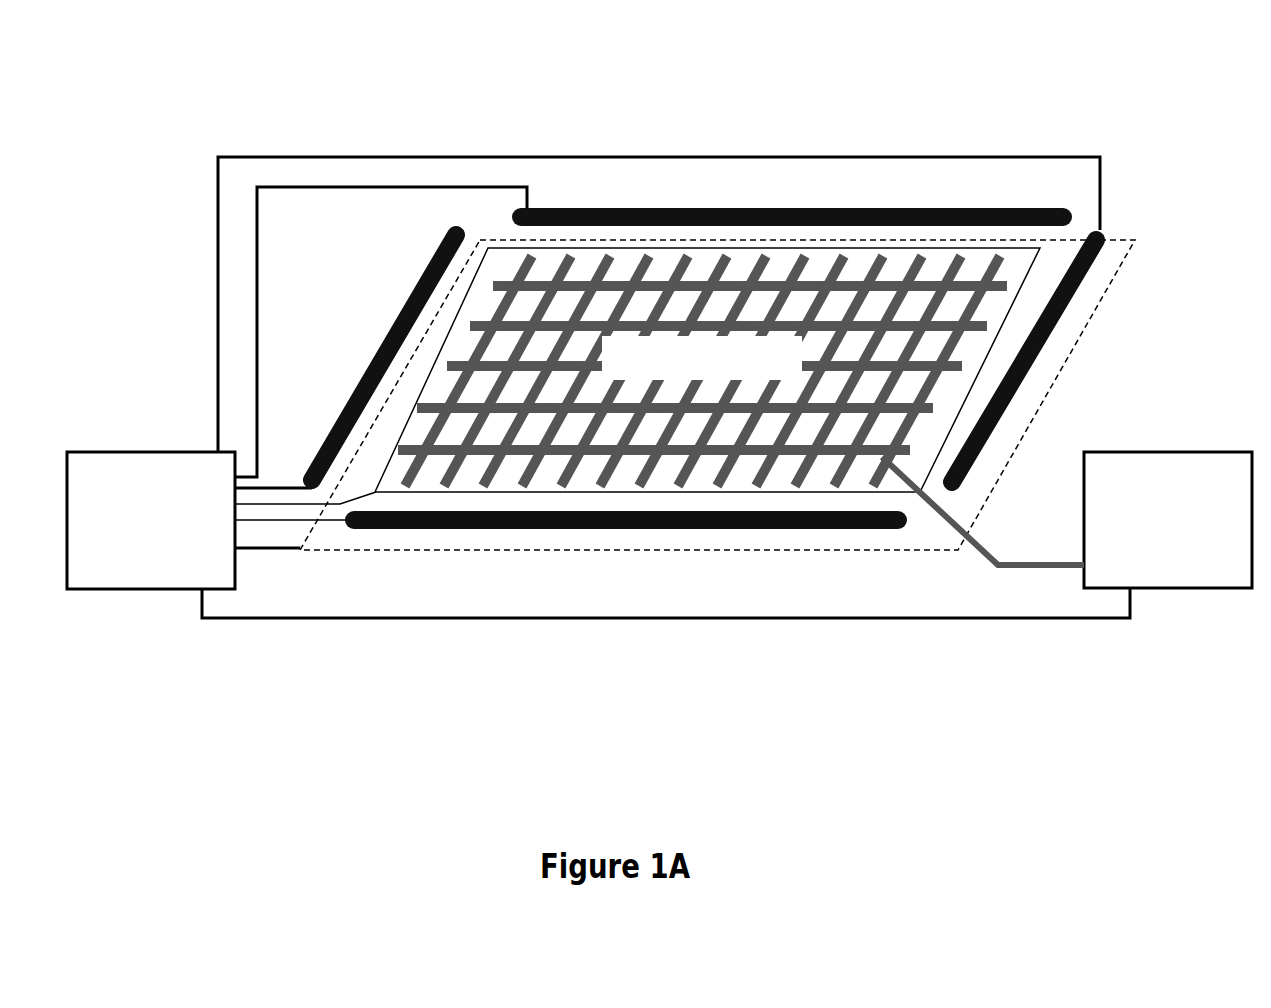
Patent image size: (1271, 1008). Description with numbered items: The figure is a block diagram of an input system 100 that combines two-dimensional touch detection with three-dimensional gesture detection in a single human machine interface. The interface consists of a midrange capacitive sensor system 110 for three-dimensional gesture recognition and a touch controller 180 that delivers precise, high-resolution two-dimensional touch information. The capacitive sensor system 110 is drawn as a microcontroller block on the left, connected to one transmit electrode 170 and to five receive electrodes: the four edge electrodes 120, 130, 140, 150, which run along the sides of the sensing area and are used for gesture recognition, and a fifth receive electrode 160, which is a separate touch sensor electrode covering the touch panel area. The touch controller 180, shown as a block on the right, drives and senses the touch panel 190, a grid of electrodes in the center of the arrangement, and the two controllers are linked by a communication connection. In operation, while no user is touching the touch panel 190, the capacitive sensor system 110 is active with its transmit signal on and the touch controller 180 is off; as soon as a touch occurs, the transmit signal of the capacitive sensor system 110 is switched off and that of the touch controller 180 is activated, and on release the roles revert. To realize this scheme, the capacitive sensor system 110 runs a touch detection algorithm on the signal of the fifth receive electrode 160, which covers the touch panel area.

The input system 100 is at (266, 88).
The capacitive sensor system 110 is at (128, 452).
The receive electrode Rx1 120 is at (432, 268).
The receive electrode Rx2 130 is at (895, 210).
The receive electrode Rx3 140 is at (1105, 236).
The receive electrode Rx0 150 is at (572, 548).
The receive electrode Rx4 160 is at (484, 240).
The transmit electrode Tx 170 is at (320, 555).
The touch controller 180 is at (1158, 452).
The touch panel 190 is at (883, 457).